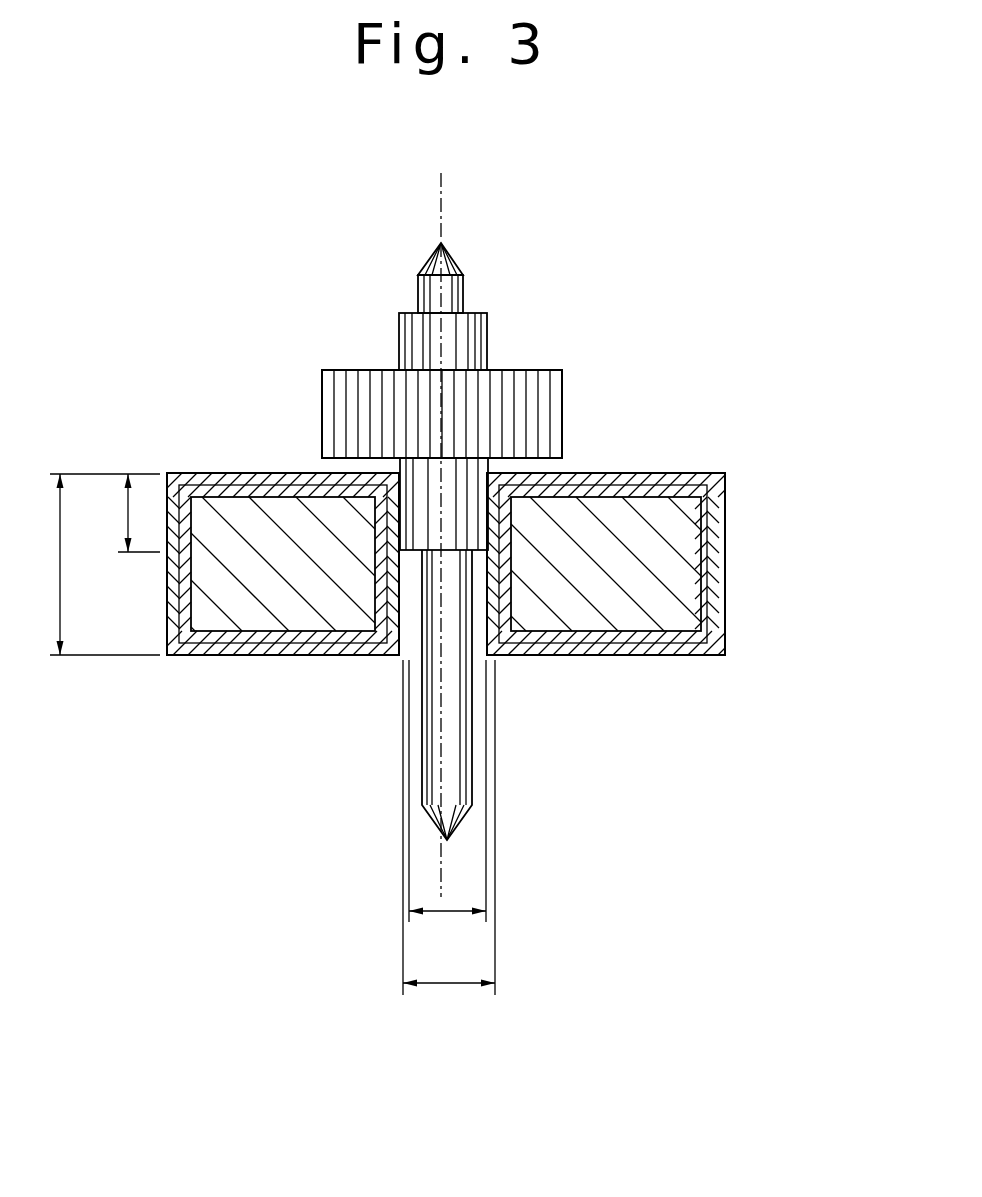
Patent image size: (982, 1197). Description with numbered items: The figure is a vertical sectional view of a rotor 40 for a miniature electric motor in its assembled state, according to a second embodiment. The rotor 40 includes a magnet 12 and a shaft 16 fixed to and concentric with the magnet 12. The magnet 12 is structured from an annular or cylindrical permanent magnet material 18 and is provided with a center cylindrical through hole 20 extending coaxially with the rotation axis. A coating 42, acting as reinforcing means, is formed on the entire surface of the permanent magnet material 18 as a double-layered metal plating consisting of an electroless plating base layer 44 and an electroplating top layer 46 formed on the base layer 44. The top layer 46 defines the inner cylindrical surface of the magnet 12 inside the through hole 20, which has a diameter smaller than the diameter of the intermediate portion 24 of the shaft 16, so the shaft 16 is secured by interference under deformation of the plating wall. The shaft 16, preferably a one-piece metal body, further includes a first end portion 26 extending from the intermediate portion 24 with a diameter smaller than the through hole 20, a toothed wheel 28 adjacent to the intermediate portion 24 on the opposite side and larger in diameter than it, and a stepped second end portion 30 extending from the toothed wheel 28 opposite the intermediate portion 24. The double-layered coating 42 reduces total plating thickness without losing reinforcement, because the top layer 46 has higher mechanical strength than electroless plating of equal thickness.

The rotor 40 is at (258, 305).
The magnet 12 is at (249, 462).
The shaft 16 is at (393, 337).
The permanent magnet material 18 is at (260, 615).
The through hole 20 is at (478, 632).
The intermediate portion 24 is at (470, 495).
The first end portion 26 is at (433, 725).
The toothed wheel 28 is at (565, 402).
The stepped second end portion 30 is at (464, 293).
The coating 42 is at (812, 460).
The electroless plating base layer 44 is at (725, 616).
The electroplating top layer 46 is at (727, 487).